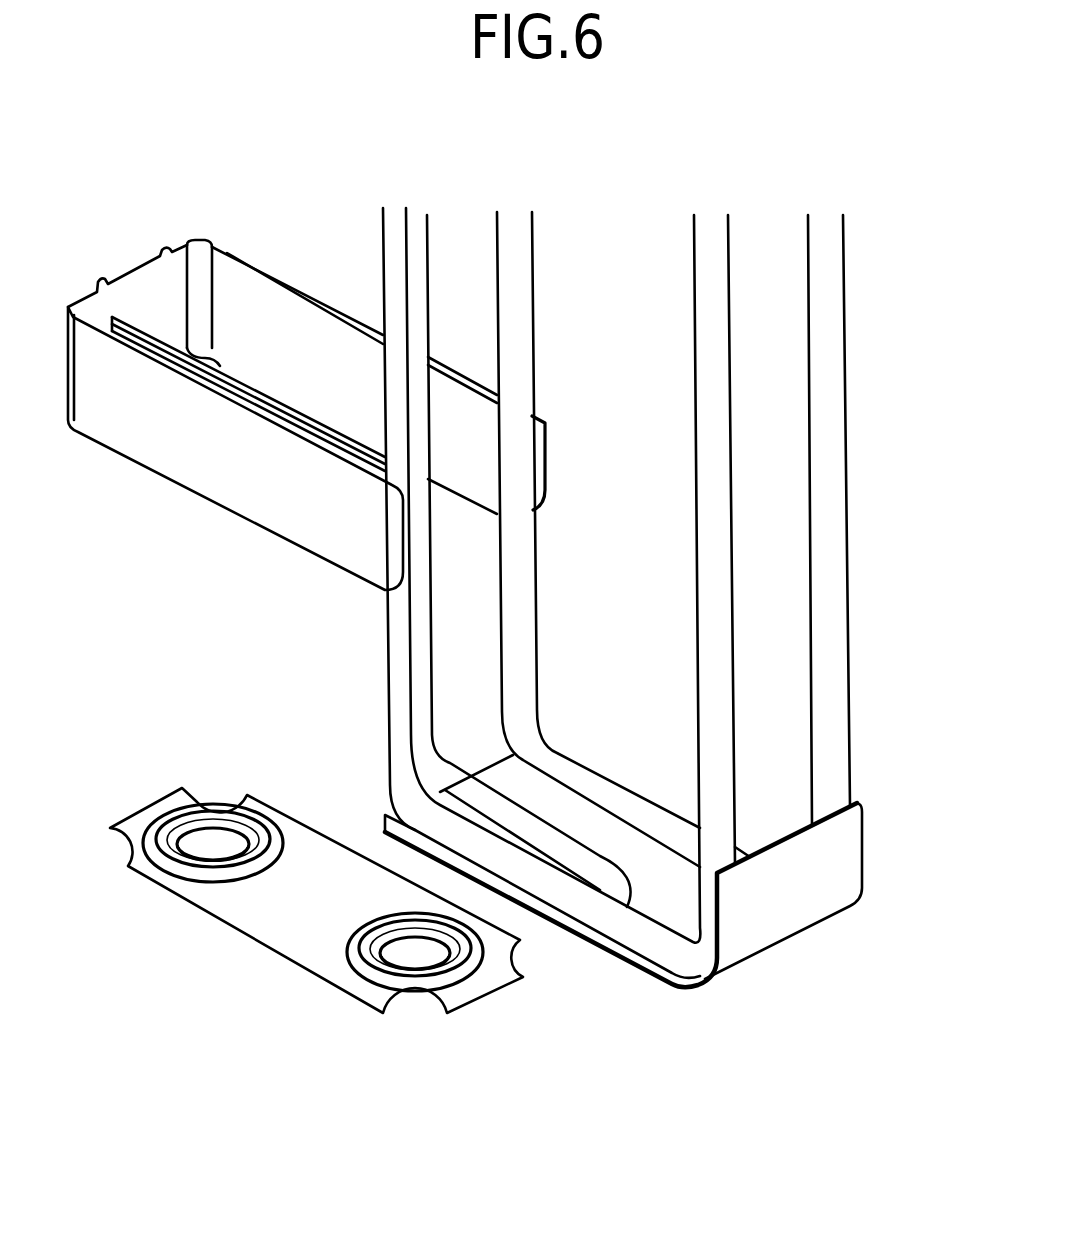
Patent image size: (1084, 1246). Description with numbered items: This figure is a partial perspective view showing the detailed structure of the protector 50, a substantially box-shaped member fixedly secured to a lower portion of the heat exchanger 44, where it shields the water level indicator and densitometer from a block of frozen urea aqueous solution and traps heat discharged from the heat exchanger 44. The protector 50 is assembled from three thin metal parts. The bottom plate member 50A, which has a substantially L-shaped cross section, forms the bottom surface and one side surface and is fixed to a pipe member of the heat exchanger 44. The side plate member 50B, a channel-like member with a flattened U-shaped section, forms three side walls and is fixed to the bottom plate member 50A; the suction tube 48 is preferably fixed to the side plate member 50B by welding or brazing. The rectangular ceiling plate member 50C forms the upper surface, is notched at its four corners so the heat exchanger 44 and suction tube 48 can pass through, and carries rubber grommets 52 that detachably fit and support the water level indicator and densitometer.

The heat exchanger 44 is at (853, 330).
The suction tube 48 is at (432, 650).
The protector 50 is at (118, 262).
The bottom plate member 50A is at (815, 915).
The side plate member 50B is at (205, 473).
The ceiling plate member 50C is at (311, 934).
The grommets 52 is at (163, 855).